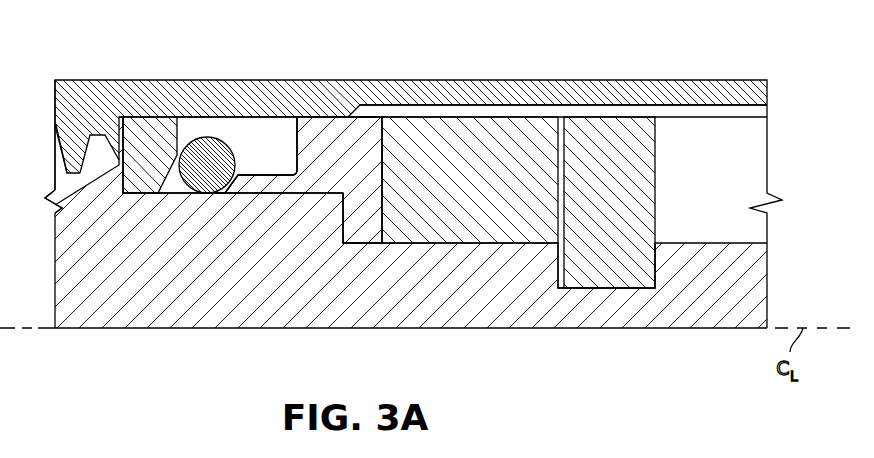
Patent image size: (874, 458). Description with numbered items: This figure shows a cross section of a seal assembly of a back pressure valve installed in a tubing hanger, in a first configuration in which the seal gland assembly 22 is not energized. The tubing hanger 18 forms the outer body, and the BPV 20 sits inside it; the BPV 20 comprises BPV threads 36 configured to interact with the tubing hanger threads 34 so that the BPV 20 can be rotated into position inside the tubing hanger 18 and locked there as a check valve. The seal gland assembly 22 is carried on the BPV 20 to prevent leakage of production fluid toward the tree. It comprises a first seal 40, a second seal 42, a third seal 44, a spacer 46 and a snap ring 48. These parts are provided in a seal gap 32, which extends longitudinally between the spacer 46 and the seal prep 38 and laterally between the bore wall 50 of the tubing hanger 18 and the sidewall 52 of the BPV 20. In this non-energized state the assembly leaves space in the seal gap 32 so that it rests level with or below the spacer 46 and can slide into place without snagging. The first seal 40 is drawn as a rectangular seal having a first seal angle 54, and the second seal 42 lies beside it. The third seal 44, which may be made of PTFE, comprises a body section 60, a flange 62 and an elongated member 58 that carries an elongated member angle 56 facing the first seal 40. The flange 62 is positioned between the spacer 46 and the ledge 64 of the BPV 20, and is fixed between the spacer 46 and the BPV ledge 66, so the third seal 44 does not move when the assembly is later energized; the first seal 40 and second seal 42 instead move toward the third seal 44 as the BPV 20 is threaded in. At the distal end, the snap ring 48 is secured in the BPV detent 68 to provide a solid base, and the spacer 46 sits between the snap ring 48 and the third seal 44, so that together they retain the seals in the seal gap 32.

The tubing hanger 18 is at (263, 93).
The BPV 20 is at (172, 320).
The seal gland assembly 22 is at (449, 98).
The seal gap 32 is at (273, 142).
The tubing hanger threads 34 is at (60, 110).
The BPV threads 36 is at (65, 190).
The seal prep 38 is at (90, 115).
The first seal 40 is at (152, 127).
The second seal 42 is at (272, 143).
The third seal 44 is at (310, 128).
The spacer 46 is at (498, 128).
The snap ring 48 is at (612, 128).
The bore wall 50 is at (90, 100).
The sidewall 52 is at (247, 193).
The first seal angle 54 is at (200, 147).
The elongated member angle 56 is at (223, 193).
The elongated member 58 is at (277, 193).
The body section 60 is at (327, 152).
The flange 62 is at (365, 228).
The ledge 64 is at (345, 243).
The BPV ledge 66 is at (340, 227).
The BPV detent 68 is at (570, 290).